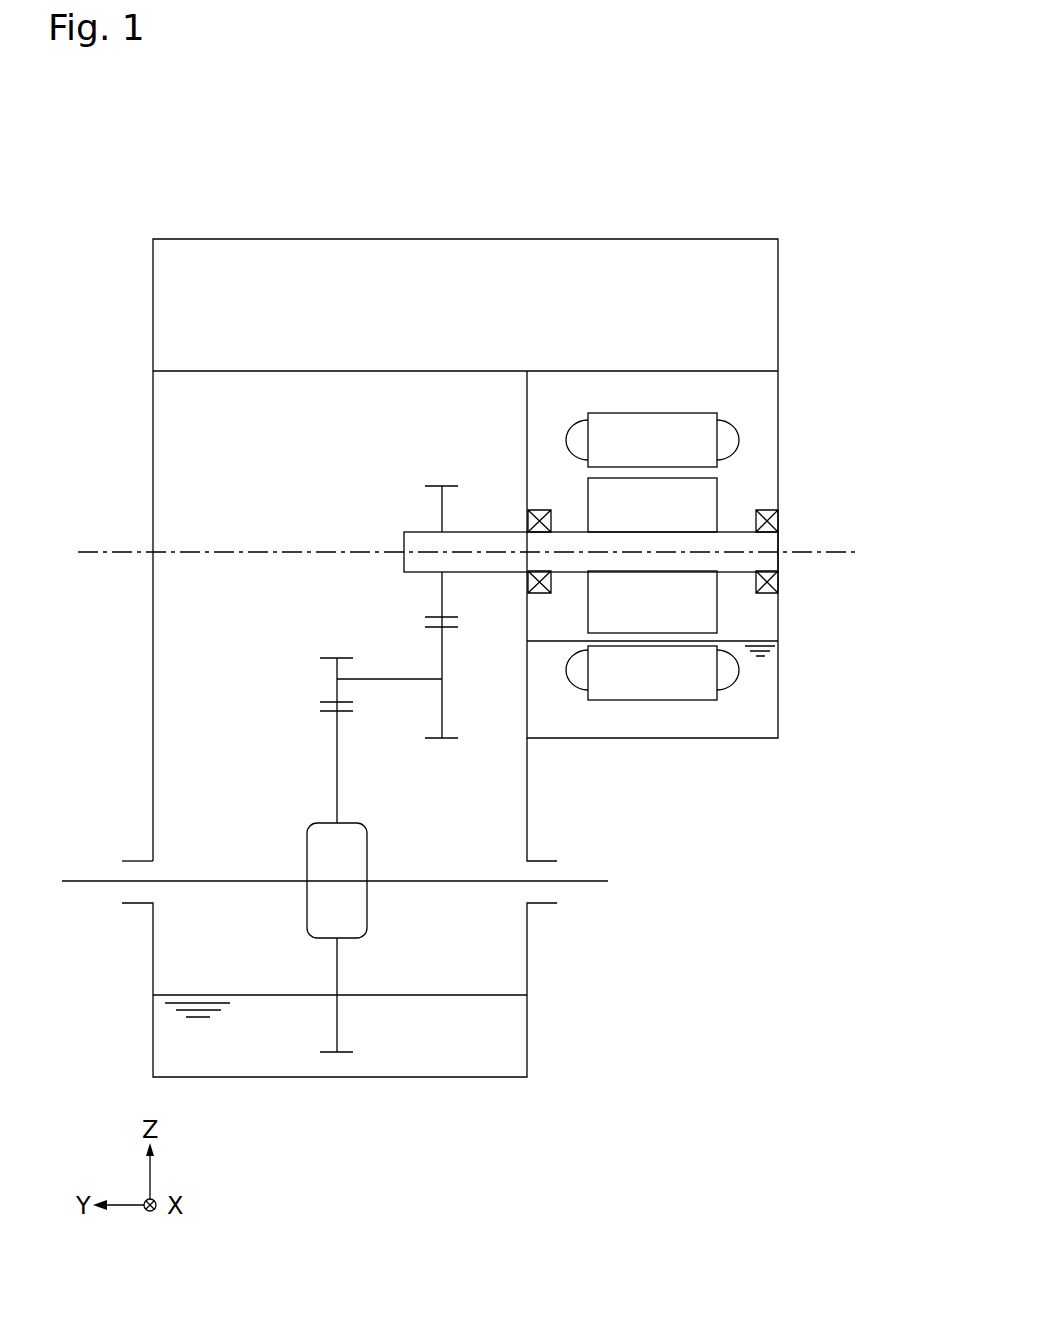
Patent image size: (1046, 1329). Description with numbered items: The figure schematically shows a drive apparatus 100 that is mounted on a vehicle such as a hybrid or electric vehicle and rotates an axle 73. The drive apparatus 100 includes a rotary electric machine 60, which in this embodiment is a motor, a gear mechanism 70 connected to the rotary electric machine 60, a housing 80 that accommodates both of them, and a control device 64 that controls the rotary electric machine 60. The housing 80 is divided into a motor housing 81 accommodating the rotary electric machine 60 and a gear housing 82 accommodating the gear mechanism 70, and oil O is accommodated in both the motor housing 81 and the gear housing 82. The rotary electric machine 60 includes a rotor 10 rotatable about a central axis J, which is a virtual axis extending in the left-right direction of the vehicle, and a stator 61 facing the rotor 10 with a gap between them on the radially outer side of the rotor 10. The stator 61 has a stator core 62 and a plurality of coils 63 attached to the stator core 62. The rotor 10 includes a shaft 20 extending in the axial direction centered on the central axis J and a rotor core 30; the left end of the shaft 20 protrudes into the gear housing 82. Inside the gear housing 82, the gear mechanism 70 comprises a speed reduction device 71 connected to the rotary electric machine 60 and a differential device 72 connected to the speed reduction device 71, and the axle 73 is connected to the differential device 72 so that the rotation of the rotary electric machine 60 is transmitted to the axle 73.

The drive apparatus 100 is at (466, 572).
The rotor 10 is at (626, 412).
The shaft 20 is at (767, 560).
The rotor core 30 is at (626, 505).
The rotary electric machine 60 is at (642, 435).
The stator 61 is at (684, 435).
The stator core 62 is at (663, 432).
The coils 63 is at (577, 425).
The control device 64 is at (215, 238).
The gear mechanism 70 is at (325, 769).
The speed reduction device 71 is at (318, 636).
The differential device 72 is at (276, 836).
The axle 73 is at (90, 883).
The housing 80 is at (466, 612).
The motor housing 81 is at (784, 708).
The gear housing 82 is at (538, 783).
The central axis J is at (115, 548).
The oil O is at (730, 713).